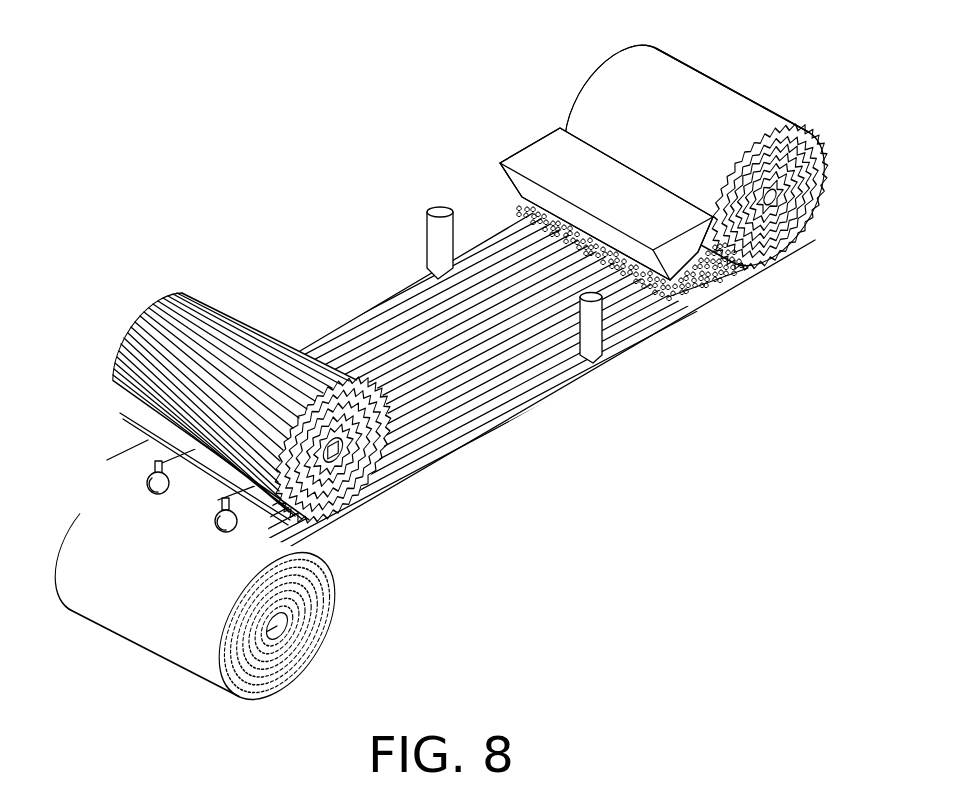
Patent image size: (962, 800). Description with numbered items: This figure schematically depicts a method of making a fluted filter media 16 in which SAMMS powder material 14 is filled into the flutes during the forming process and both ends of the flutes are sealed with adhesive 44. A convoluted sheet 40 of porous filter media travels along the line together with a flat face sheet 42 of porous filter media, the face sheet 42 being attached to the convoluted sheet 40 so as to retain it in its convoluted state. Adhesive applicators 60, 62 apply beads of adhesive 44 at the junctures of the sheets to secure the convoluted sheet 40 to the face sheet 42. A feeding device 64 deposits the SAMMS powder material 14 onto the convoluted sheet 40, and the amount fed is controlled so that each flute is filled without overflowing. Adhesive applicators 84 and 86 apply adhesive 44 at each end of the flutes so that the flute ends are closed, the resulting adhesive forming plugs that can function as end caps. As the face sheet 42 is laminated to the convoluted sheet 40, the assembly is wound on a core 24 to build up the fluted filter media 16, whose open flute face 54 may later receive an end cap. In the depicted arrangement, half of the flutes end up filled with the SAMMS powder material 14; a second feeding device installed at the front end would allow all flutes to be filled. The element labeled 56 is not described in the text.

The SAMMS powder material 14 is at (700, 317).
The fluted filter media 16 is at (698, 185).
The core 24 is at (827, 187).
The convoluted sheet 40 is at (262, 326).
The face sheet 42 is at (321, 530).
The adhesive 44 is at (498, 238).
The open flute face 54 is at (823, 217).
The roll core end 56 is at (577, 107).
The adhesive applicator 60 is at (148, 478).
The adhesive applicator 62 is at (207, 537).
The feeding device 64 is at (520, 150).
The adhesive applicator 84 is at (424, 230).
The adhesive applicator 86 is at (593, 348).